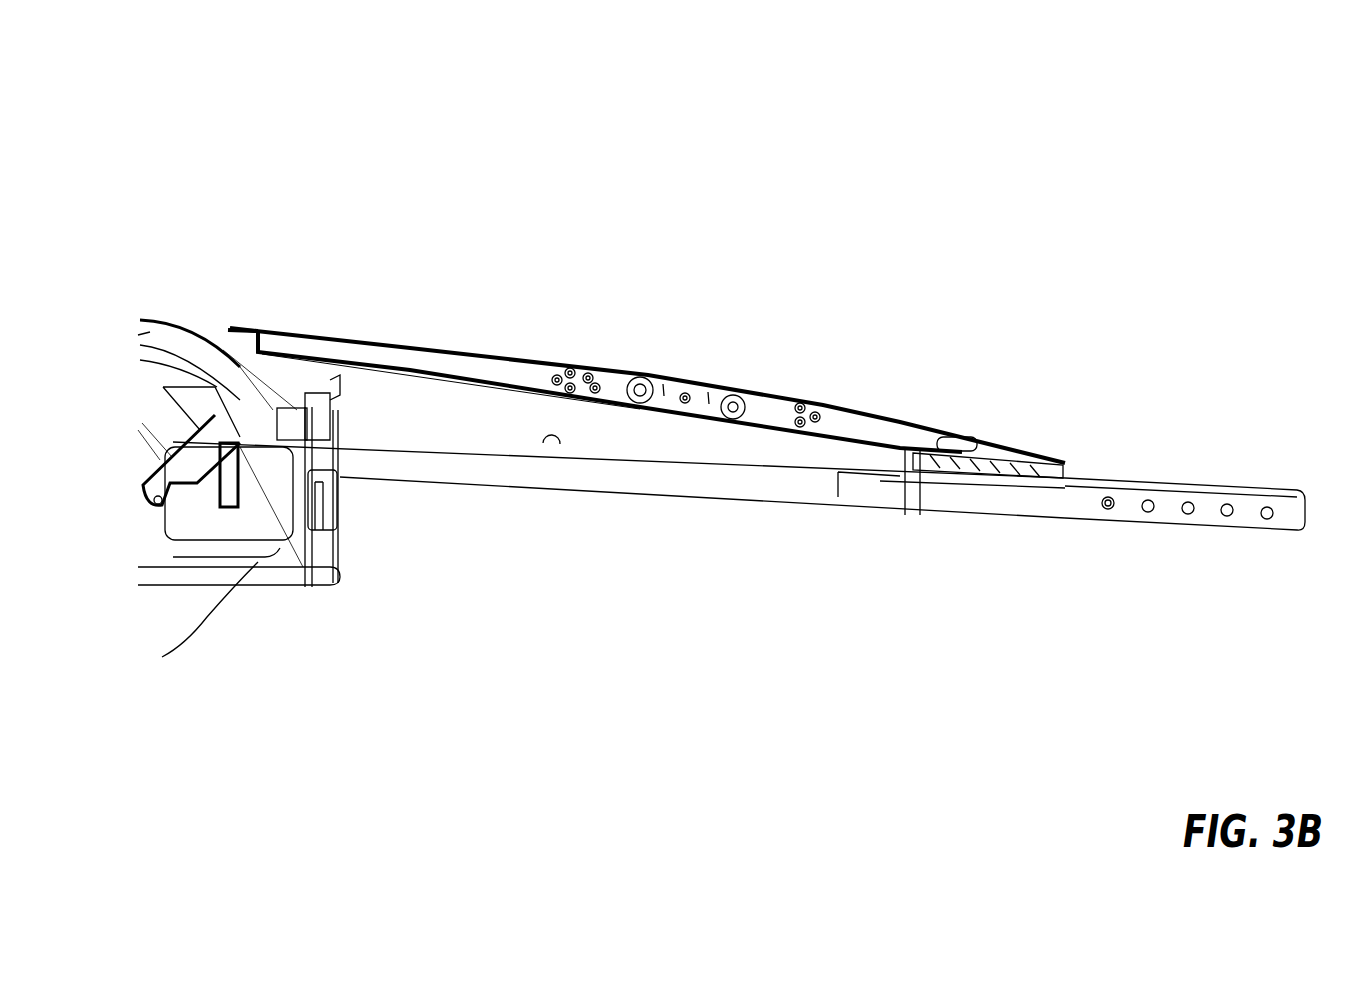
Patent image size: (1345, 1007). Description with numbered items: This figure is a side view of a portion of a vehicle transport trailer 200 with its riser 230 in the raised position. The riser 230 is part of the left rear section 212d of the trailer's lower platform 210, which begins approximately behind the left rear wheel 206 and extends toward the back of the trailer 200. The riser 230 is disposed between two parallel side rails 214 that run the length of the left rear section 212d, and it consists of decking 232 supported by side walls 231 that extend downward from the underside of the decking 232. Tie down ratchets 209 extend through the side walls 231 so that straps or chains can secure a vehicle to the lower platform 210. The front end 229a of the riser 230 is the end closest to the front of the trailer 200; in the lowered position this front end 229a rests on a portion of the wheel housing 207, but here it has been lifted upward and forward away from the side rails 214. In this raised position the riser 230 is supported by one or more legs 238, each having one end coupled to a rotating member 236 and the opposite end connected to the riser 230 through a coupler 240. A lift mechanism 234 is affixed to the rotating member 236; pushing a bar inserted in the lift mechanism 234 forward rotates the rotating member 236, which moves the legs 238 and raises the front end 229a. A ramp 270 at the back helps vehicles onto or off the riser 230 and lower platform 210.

The transport trailer 200 is at (734, 369).
The lower platform 210 is at (717, 439).
The wheel housing 207 is at (170, 327).
The front end 229a is at (230, 327).
The coupler 240 is at (335, 385).
The leg 238 is at (330, 385).
The decking 232 is at (458, 350).
The riser 230 is at (647, 343).
The side wall 231 is at (528, 373).
The tie down ratchet 209 is at (728, 400).
The ramp 270 is at (1133, 465).
The lift mechanism 234 is at (318, 410).
The rotating member 236 is at (318, 437).
The side rail 214 is at (637, 472).
The left rear section 212d is at (713, 618).
The left rear wheel 206 is at (183, 612).